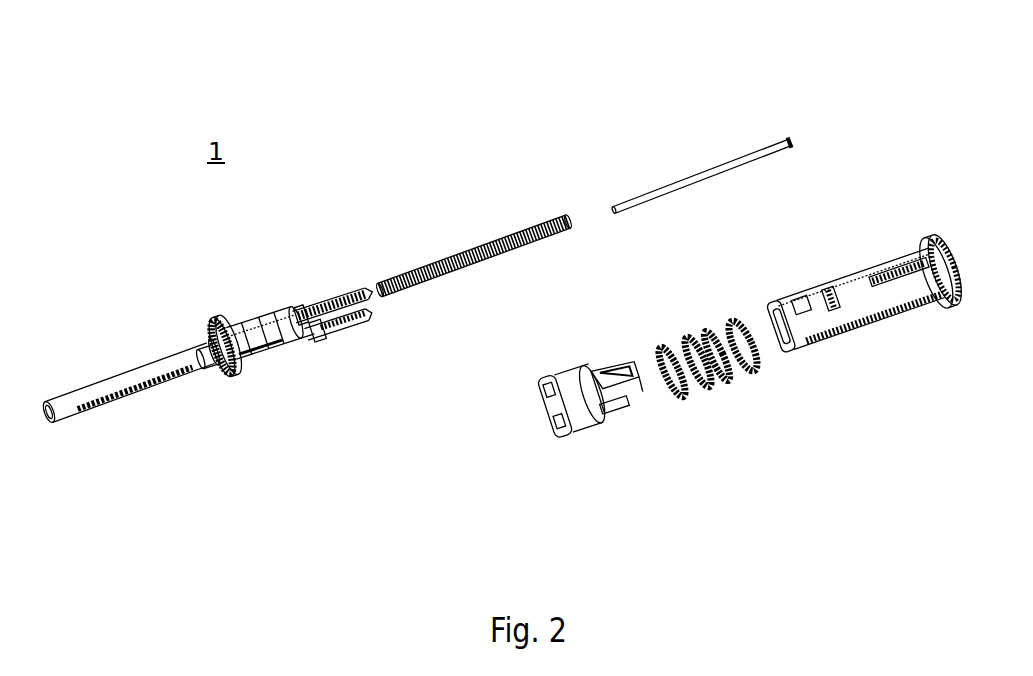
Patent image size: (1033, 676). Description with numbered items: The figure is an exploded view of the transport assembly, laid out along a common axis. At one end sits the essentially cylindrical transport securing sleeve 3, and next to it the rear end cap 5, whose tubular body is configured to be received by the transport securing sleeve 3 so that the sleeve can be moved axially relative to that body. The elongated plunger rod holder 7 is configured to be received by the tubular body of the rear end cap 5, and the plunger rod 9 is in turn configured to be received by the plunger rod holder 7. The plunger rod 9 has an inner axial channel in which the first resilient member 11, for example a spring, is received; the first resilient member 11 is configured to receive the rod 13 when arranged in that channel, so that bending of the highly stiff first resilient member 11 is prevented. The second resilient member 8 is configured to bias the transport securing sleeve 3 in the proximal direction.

The transport securing sleeve 3 is at (588, 430).
The rear end cap 5 is at (838, 278).
The plunger rod holder 7 is at (259, 312).
The second resilient member 8 is at (720, 380).
The plunger rod 9 is at (157, 385).
The first resilient member 11 is at (463, 256).
The rod 13 is at (698, 172).